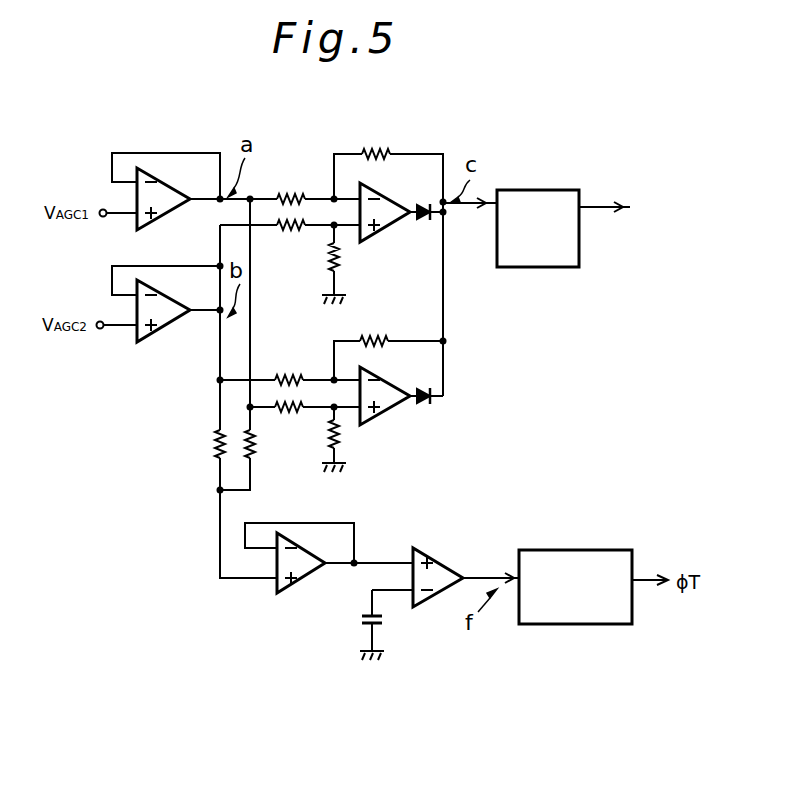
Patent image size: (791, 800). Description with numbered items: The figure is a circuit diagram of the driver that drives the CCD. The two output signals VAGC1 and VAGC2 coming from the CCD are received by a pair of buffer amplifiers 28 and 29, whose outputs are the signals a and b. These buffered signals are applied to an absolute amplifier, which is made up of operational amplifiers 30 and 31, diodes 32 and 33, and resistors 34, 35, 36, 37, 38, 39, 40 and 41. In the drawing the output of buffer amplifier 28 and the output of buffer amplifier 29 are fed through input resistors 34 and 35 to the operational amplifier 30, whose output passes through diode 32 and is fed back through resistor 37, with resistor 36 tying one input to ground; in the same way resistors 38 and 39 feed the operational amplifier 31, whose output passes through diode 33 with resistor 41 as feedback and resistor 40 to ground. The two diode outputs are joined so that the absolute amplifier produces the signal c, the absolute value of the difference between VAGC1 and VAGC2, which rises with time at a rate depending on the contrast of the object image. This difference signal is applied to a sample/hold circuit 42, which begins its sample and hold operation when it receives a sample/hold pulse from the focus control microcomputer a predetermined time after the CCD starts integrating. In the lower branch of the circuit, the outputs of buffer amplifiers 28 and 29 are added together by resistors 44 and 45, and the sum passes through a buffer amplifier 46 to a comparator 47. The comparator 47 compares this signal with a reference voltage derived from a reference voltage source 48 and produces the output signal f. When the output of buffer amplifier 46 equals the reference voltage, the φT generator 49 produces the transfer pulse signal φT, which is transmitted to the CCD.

The buffer amplifier 28 is at (164, 223).
The buffer amplifier 29 is at (164, 334).
The operational amplifier 30 is at (392, 228).
The operational amplifier 31 is at (392, 413).
The diode 32 is at (420, 205).
The diode 33 is at (437, 404).
The resistor 34 is at (290, 193).
The resistor 35 is at (289, 231).
The resistor 36 is at (340, 262).
The resistor 37 is at (390, 150).
The resistor 38 is at (288, 373).
The resistor 39 is at (289, 413).
The resistor 40 is at (340, 440).
The resistor 41 is at (388, 337).
The sample/hold circuit 42 is at (580, 190).
The resistor 44 is at (214, 452).
The resistor 45 is at (253, 455).
The buffer amplifier 46 is at (302, 581).
The comparator 47 is at (446, 565).
The reference voltage source 48 is at (384, 622).
The φT generator 49 is at (618, 550).